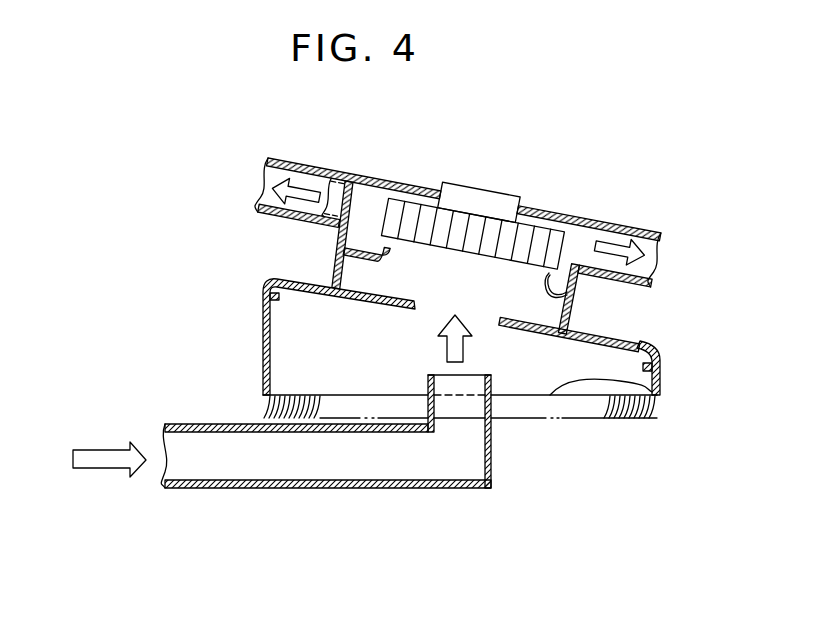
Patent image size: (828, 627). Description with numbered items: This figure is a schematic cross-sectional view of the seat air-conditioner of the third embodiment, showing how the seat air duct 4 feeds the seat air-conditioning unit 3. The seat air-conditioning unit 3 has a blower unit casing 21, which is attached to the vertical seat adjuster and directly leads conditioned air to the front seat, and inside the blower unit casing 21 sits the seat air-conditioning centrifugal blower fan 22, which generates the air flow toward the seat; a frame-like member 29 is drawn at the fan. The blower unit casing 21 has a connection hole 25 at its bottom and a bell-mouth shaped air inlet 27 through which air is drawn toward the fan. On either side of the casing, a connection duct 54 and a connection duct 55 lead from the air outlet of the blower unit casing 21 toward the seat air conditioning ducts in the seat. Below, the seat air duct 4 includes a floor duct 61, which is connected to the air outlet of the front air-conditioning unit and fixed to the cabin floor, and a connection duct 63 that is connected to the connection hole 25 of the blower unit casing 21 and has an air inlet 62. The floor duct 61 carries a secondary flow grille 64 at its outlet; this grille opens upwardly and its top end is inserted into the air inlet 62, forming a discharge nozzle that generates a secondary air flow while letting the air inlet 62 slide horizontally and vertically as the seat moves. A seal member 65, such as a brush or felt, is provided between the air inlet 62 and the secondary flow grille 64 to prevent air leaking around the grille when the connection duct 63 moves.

The seat air-conditioning unit 3 is at (594, 195).
The seat air duct 4 is at (327, 507).
The blower unit casing 21 is at (334, 251).
The seat air-conditioning centrifugal blower fan 22 is at (423, 217).
The connection hole 25 is at (462, 304).
The bell-mouth shaped air inlet 27 is at (512, 272).
The filter frame 29 is at (485, 200).
The connection duct 54 is at (293, 157).
The connection duct 55 is at (648, 228).
The floor duct 61 is at (290, 488).
The air inlet 62 is at (660, 390).
The connection duct 63 is at (263, 340).
The secondary flow grille 64 is at (492, 380).
The seal member 65 is at (657, 405).